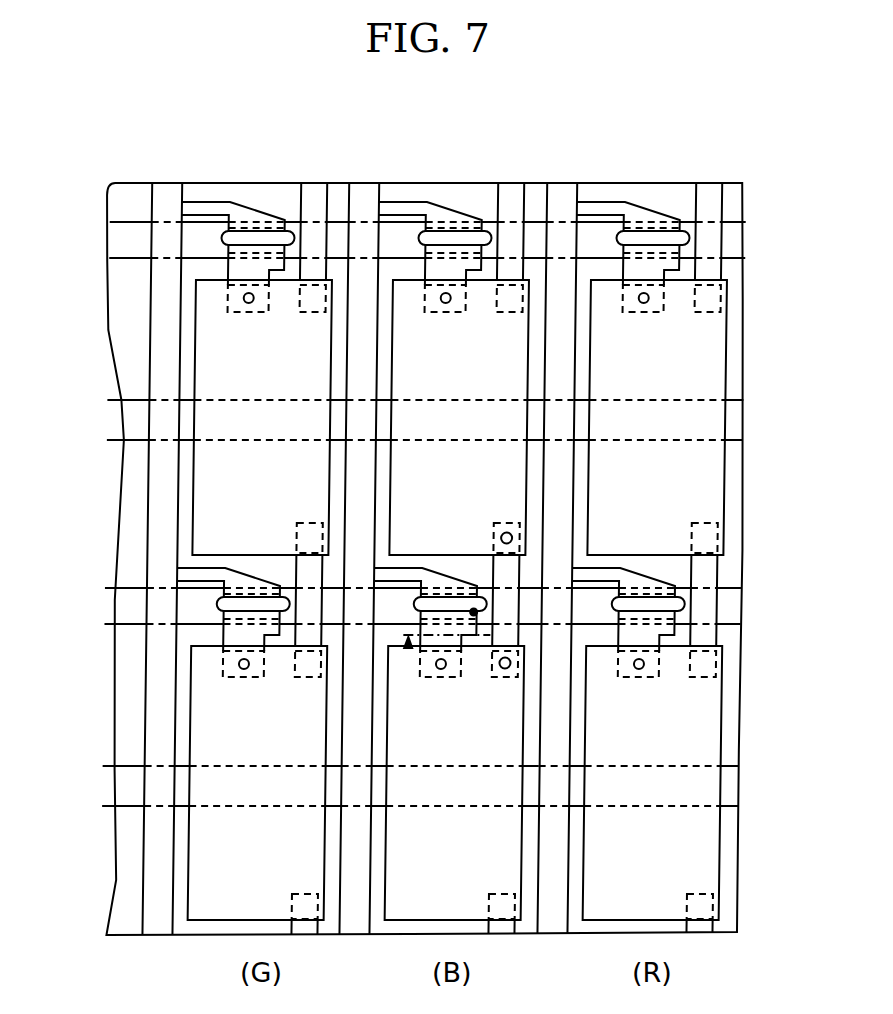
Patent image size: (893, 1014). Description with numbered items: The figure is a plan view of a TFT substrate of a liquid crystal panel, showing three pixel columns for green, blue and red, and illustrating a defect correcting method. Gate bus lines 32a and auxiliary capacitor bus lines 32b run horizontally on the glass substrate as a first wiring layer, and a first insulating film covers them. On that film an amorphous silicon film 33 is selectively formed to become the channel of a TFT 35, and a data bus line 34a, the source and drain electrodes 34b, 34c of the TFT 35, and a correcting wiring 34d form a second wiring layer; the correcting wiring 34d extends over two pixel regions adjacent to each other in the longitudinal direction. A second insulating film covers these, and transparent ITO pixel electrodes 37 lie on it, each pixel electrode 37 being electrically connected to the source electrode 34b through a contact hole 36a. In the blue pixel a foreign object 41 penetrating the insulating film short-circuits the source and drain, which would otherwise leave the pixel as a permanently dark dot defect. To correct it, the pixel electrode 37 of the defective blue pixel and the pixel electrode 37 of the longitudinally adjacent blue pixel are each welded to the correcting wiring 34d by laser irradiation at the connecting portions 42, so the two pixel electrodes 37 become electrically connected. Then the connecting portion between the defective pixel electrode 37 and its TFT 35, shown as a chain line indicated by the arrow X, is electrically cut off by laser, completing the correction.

The gate bus line 32a is at (125, 243).
The auxiliary capacitor bus line 32b is at (130, 422).
The amorphous silicon film 33 is at (219, 214).
The data bus line 34a is at (160, 192).
The source electrode 34b is at (228, 268).
The drain electrode 34c is at (258, 210).
The correcting wiring 34d is at (300, 289).
The TFT 35 is at (289, 203).
The contact hole 36a is at (250, 304).
The pixel electrode 37 is at (205, 470).
The foreign object 41 is at (471, 610).
The laser connecting portion 42 is at (507, 529).
The cut-off connecting portion X is at (443, 674).